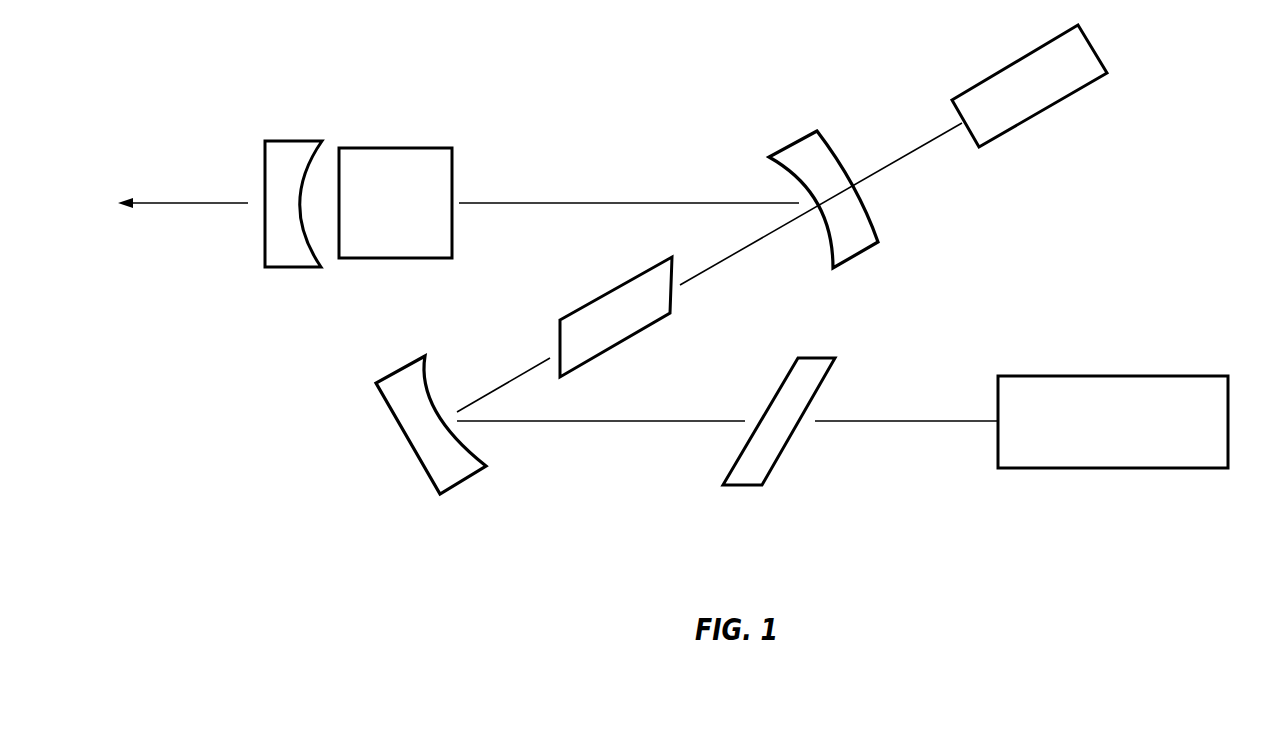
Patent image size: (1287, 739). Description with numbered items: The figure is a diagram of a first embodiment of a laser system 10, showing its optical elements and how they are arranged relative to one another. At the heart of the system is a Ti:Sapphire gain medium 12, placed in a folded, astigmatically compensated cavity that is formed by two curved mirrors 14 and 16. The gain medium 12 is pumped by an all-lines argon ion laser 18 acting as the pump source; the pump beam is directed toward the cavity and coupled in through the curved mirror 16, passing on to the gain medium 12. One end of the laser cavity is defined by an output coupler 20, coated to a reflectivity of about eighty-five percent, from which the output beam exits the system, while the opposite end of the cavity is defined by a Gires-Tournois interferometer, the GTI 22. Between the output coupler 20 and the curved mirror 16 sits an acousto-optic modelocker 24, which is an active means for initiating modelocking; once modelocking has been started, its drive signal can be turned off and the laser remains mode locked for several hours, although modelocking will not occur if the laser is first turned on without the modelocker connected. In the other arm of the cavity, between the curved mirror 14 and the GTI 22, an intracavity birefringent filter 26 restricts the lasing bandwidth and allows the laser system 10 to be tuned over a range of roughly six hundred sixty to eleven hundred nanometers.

The laser system 10 is at (590, 510).
The Ti:Sapphire gain medium 12 is at (672, 310).
The curved mirror 14 is at (376, 397).
The curved mirror 16 is at (873, 227).
The argon ion laser 18 is at (1107, 73).
The output coupler 20 is at (265, 242).
The GTI 22 is at (1228, 382).
The acousto-optic modelocker 24 is at (452, 153).
The birefringent filter 26 is at (825, 377).